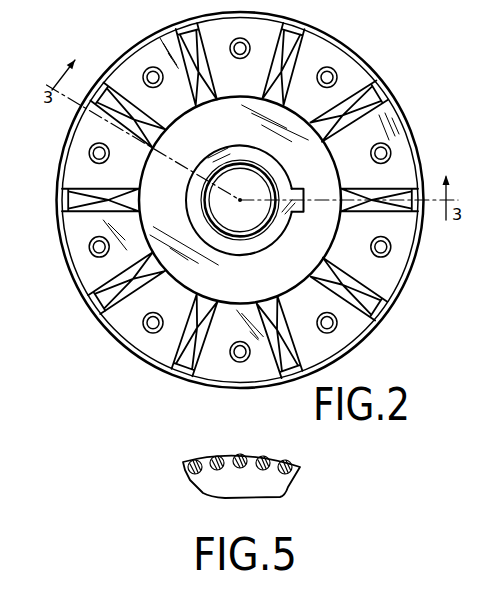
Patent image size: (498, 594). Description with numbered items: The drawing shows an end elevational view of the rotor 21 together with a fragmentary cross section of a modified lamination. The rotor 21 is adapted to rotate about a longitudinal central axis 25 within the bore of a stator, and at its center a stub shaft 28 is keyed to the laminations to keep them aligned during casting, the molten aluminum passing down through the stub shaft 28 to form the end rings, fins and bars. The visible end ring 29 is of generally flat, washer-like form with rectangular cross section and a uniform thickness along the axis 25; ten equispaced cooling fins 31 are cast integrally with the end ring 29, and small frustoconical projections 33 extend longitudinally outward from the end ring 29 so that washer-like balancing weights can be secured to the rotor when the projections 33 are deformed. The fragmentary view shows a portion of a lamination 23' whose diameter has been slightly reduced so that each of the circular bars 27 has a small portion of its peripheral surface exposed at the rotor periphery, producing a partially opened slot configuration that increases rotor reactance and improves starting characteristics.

In FIG. 2, the rotor 21 is at (414, 296).
In FIG. 2, the longitudinal central axis 25 is at (239, 200).
In FIG. 2, the stub shaft 28 is at (242, 152).
In FIG. 2, the end ring 29 is at (157, 347).
In FIG. 2, the cooling fins 31 is at (302, 353).
In FIG. 2, the frustoconical projections 33 is at (335, 73).
In FIG. 5, the bars 27 is at (241, 457).
In FIG. 5, the lamination 23' is at (259, 488).